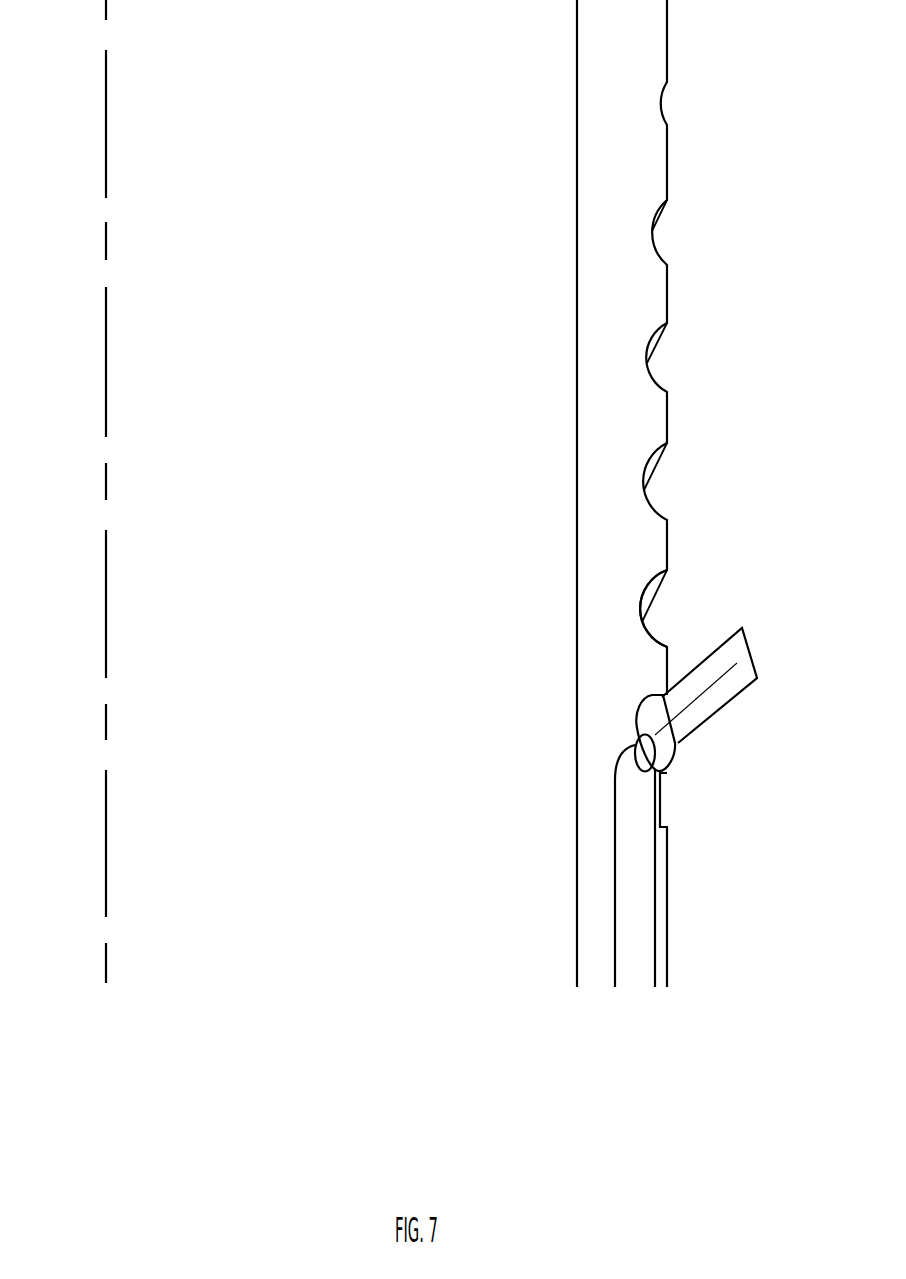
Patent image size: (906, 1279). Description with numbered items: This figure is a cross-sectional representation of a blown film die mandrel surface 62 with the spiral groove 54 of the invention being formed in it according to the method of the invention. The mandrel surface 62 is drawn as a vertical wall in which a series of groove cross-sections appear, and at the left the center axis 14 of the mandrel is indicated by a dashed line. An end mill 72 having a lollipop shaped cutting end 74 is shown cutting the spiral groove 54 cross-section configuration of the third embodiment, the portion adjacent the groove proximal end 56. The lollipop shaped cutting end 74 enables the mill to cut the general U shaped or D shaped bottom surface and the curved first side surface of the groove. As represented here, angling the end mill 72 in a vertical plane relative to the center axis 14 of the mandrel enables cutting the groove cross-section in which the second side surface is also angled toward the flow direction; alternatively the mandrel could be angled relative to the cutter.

The center axis 14 is at (100, 480).
The mandrel surface 62 is at (672, 47).
The spiral groove 54 is at (661, 621).
The end mill 72 is at (695, 735).
The lollipop shaped cutting end 74 is at (647, 697).
The groove proximal end 56 is at (677, 768).